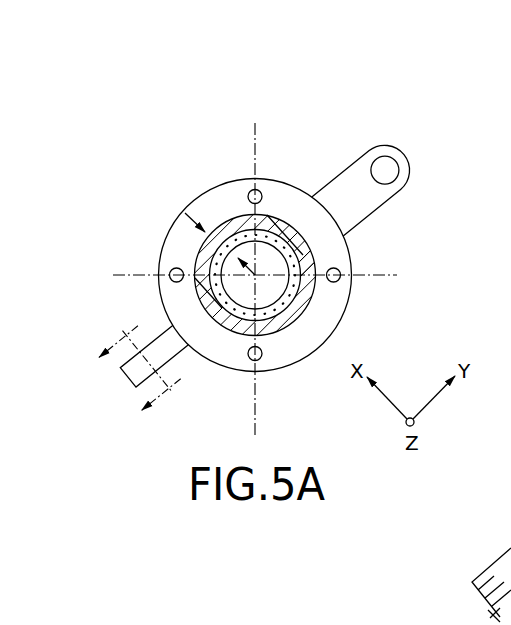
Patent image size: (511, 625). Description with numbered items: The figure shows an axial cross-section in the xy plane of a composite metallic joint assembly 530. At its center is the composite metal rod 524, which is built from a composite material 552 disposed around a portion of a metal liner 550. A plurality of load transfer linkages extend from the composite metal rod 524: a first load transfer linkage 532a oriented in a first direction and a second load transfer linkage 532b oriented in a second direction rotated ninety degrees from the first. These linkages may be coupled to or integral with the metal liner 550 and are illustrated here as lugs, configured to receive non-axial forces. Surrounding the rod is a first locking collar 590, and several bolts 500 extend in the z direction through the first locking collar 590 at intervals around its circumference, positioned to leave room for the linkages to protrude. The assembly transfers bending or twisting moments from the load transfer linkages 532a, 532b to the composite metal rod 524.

The bolts 500 is at (249, 191).
The composite metal rod 524 is at (206, 224).
The composite metallic joint assembly 530 is at (125, 167).
The first load transfer linkage 532a is at (337, 189).
The second load transfer linkage 532b is at (168, 349).
The metal liner 550 is at (295, 258).
The composite material 552 is at (307, 292).
The first locking collar 590 is at (295, 346).